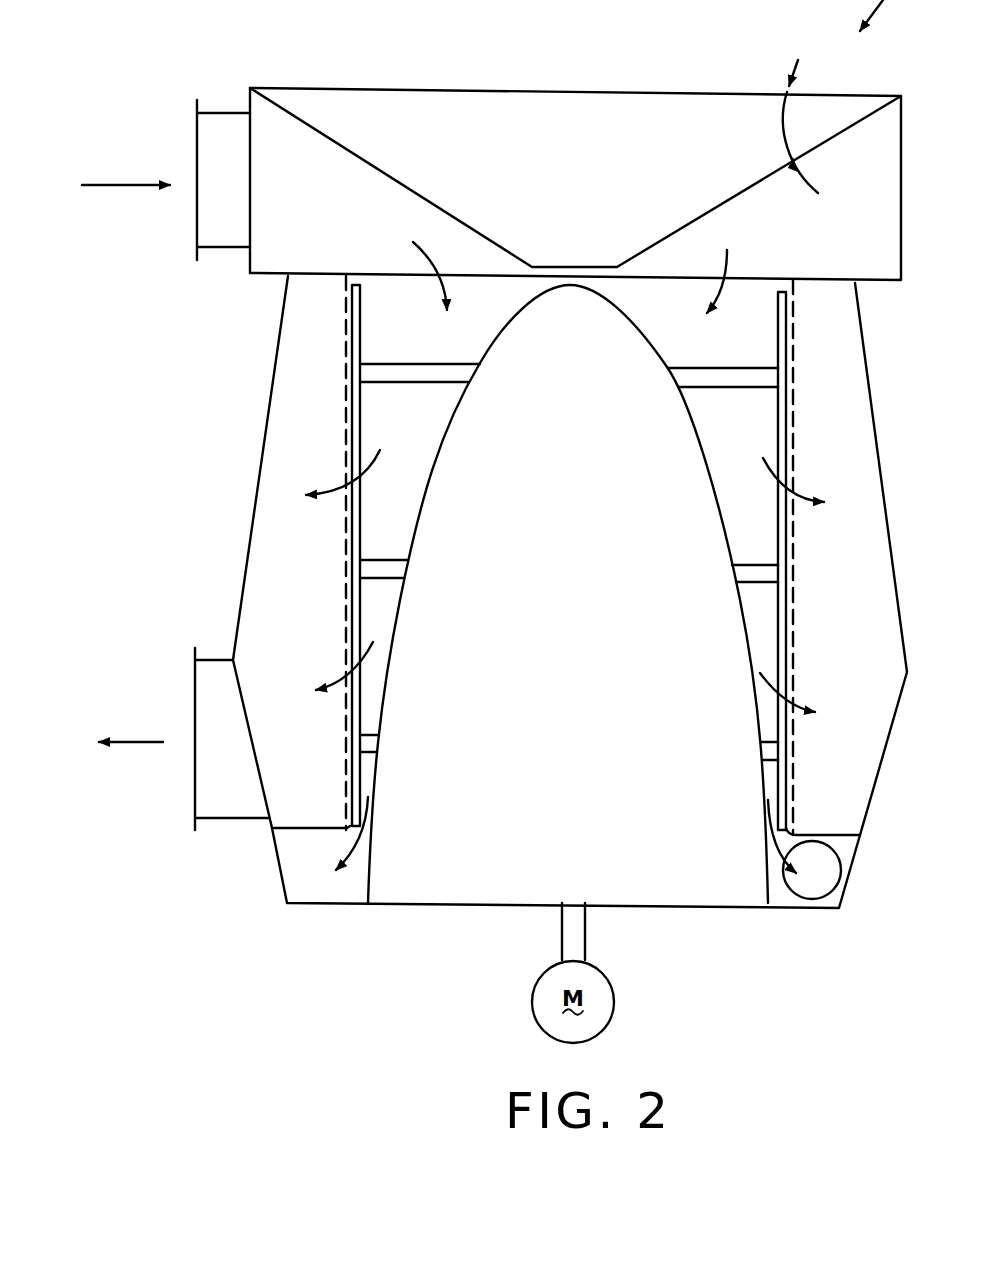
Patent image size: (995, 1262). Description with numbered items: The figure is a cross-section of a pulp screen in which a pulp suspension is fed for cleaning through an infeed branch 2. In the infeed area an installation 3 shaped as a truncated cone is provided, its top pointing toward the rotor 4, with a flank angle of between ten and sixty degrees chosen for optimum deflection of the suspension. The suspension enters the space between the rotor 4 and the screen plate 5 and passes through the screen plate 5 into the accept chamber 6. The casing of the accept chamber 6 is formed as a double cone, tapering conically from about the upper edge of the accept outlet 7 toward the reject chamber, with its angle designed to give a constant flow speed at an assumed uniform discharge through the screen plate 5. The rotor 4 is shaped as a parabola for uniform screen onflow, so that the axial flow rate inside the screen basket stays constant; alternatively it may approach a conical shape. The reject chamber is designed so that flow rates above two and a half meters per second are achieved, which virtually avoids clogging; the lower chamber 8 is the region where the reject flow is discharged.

The infeed branch 2 is at (200, 232).
The installation 3 is at (493, 188).
The rotor 4 is at (445, 447).
The screen plate 5 is at (350, 383).
The accept chamber 6 is at (265, 592).
The accept outlet 7 is at (133, 745).
The collection chamber 8 is at (290, 865).